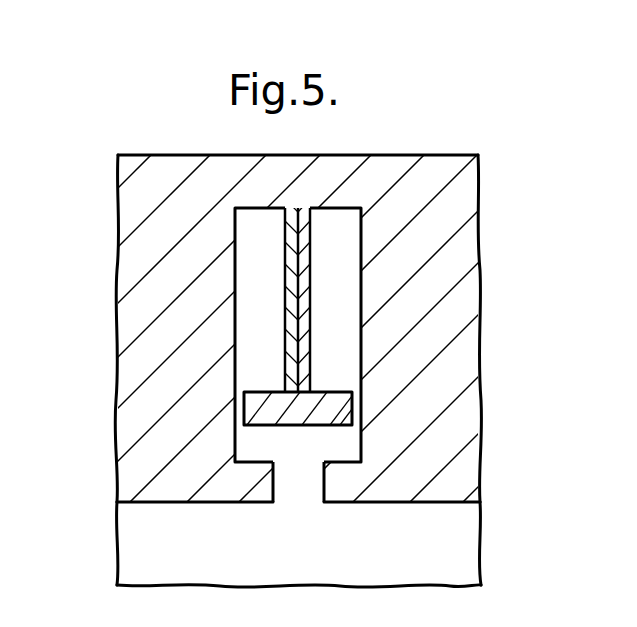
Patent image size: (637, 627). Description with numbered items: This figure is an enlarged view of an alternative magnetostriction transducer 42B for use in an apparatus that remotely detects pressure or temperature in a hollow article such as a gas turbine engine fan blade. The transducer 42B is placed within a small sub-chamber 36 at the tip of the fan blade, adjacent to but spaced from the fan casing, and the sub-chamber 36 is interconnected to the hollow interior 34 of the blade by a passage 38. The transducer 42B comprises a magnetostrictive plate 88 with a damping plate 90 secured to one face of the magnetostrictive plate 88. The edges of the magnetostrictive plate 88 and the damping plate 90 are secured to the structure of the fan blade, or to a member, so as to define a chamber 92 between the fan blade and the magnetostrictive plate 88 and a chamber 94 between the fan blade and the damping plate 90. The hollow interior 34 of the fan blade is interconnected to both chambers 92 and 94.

The hollow interior 34 is at (447, 542).
The sub-chamber 36 is at (343, 345).
The passage 38 is at (300, 482).
The magnetostriction transducer 42B is at (268, 357).
The magnetostrictive plate 88 is at (285, 320).
The damping plate 90 is at (315, 295).
The chamber 92 is at (260, 255).
The chamber 94 is at (343, 248).